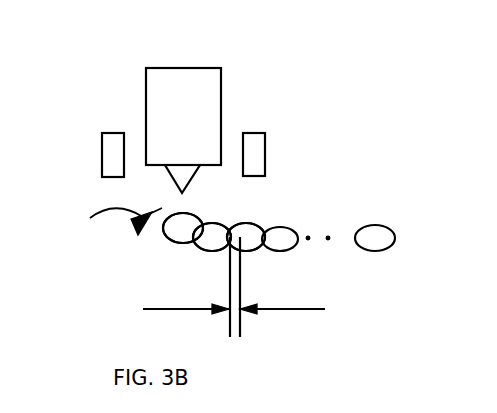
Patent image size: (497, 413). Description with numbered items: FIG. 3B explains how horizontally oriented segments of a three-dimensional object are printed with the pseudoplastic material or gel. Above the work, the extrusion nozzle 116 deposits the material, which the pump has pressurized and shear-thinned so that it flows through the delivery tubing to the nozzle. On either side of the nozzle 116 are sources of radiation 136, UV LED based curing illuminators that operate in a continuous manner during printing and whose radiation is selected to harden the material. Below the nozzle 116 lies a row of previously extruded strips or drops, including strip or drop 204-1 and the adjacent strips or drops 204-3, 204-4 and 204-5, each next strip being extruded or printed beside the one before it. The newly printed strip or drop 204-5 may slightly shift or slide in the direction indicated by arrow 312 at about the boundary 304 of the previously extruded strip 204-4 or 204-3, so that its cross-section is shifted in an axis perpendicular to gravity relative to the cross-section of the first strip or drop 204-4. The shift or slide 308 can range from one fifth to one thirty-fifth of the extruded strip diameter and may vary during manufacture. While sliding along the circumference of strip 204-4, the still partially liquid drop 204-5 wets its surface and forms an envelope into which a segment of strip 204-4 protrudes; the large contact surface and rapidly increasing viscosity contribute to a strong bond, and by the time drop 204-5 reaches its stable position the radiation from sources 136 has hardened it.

The extrusion nozzle 116 is at (192, 68).
The source of radiation 136 is at (112, 133).
The arrow 312 is at (112, 225).
The boundary 304 is at (207, 225).
The strip or drop 204-5 is at (183, 225).
The strip or drop 204-4 is at (215, 238).
The strip or drop 204-3 is at (252, 250).
The strip or drop 204-1 is at (375, 232).
The shift or slide 308 is at (240, 310).